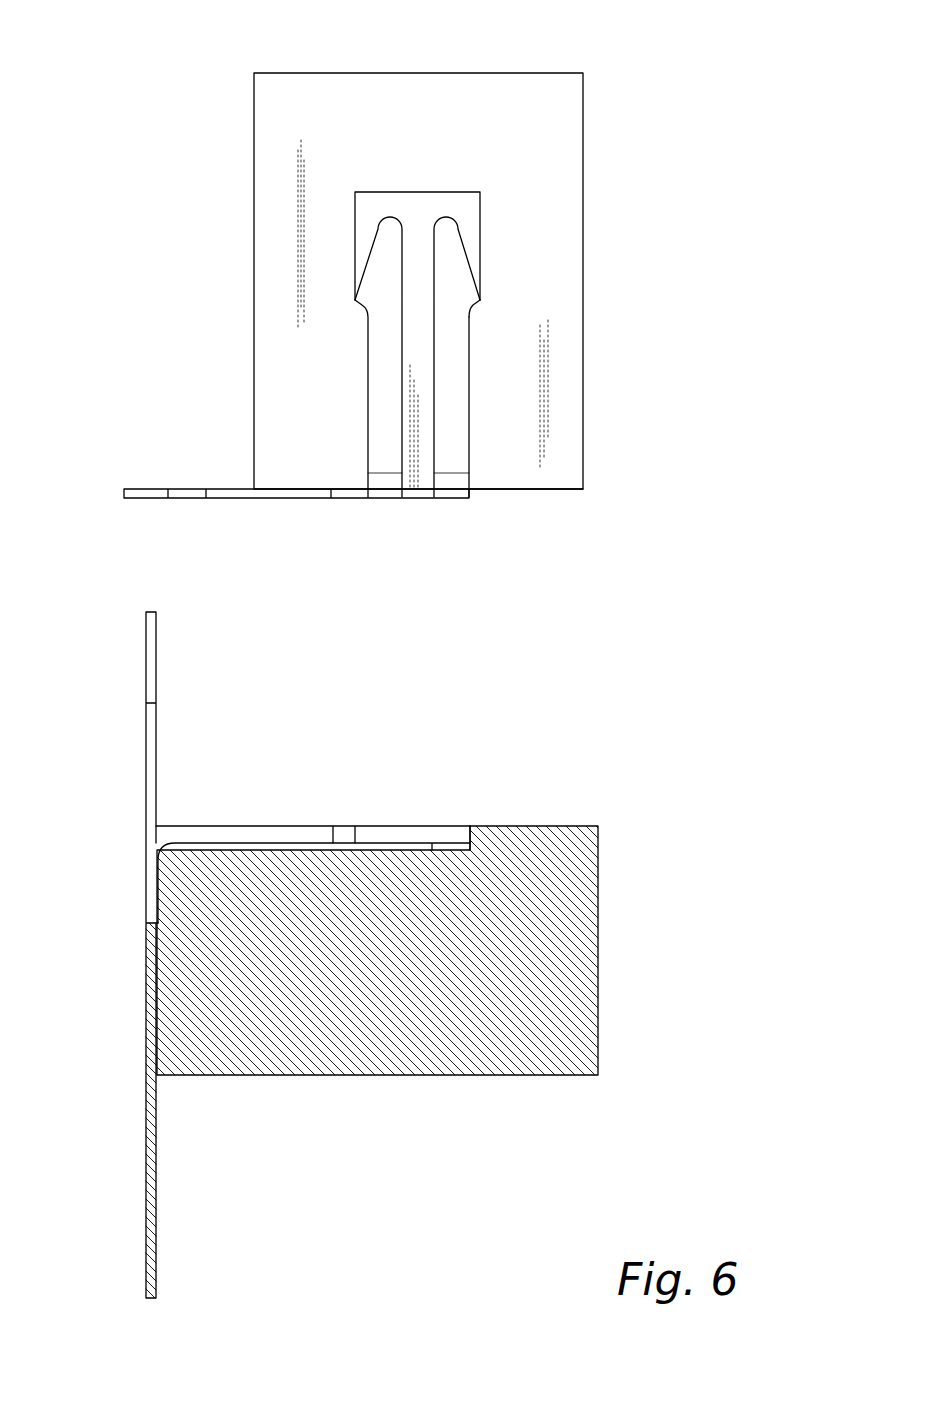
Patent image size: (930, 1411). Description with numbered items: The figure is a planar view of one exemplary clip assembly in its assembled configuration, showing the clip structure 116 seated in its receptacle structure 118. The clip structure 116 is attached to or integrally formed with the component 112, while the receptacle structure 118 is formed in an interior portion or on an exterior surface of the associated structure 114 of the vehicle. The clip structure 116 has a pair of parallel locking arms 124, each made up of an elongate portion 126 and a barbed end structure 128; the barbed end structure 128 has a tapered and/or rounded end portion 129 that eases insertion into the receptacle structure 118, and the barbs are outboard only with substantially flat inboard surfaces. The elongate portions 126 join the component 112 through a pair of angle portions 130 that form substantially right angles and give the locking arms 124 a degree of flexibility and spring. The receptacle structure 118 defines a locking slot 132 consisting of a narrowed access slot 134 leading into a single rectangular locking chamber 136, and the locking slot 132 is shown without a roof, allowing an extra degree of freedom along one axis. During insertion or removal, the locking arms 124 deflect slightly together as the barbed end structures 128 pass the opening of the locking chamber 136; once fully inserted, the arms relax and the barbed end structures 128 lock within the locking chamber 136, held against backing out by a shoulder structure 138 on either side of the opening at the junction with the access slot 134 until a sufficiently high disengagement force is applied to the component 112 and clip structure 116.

The component 112 is at (245, 498).
The associated structure 114 is at (427, 73).
The clip structure 116 is at (460, 162).
The receptacle structure 118 is at (475, 428).
The locking arm 124 is at (475, 372).
The elongate portion 126 is at (368, 358).
The barbed end structure 128 is at (370, 250).
The tapered and/or rounded end portion 129 is at (458, 210).
The angle portion 130 is at (390, 512).
The locking slot 132 is at (218, 822).
The access slot 134 is at (367, 428).
The locking chamber 136 is at (355, 178).
The shoulder structure 138 is at (478, 313).